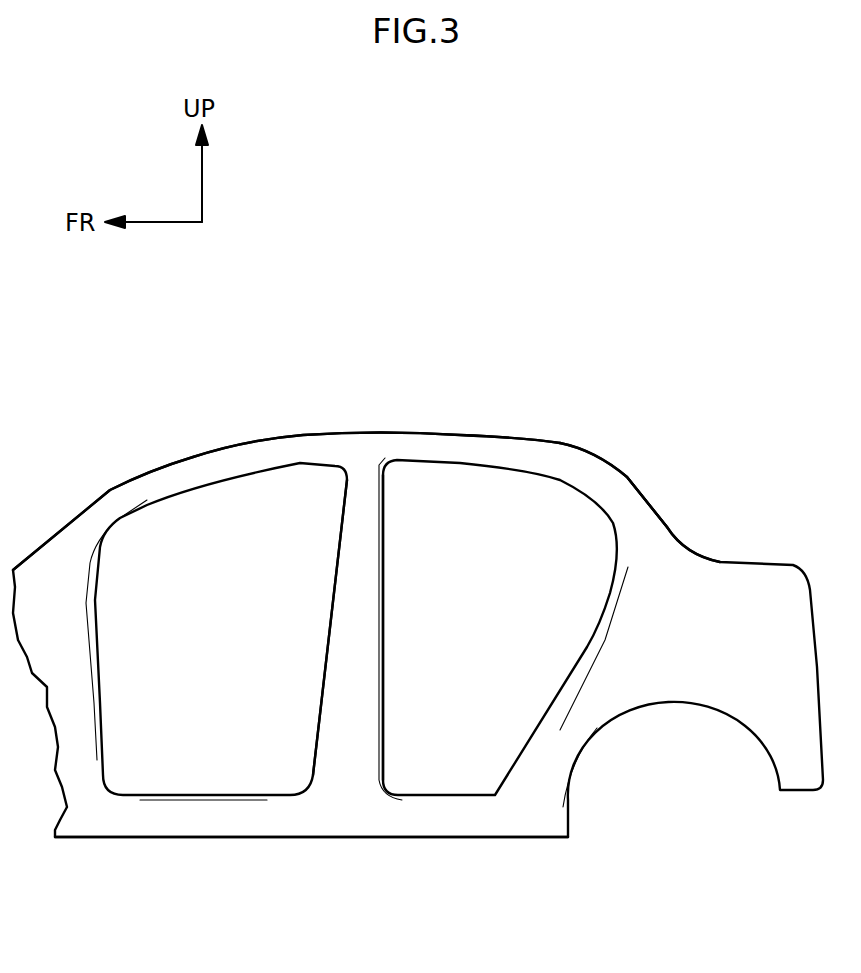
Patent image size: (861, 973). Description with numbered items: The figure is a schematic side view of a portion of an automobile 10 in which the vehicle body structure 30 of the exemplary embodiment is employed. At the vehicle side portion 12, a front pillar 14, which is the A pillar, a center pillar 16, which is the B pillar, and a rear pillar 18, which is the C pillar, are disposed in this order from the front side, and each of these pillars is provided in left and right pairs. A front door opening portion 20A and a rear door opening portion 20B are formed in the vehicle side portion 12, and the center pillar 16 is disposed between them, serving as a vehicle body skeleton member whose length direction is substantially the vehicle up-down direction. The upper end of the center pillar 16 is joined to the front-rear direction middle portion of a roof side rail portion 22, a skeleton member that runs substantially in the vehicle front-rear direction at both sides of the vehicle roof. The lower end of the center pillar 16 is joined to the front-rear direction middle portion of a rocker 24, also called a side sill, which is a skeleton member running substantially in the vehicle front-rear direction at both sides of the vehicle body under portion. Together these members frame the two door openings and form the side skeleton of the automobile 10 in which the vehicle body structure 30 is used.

The automobile 10 is at (583, 338).
The vehicle side portion 12 is at (625, 447).
The front pillar 14 is at (78, 609).
The center pillar 16 is at (378, 547).
The rear pillar 18 is at (642, 510).
The front door opening portion 20A is at (230, 480).
The rear door opening portion 20B is at (494, 478).
The roof side rail portion 22 is at (305, 448).
The rocker 24 is at (235, 820).
The vehicle body structure 30 is at (277, 760).